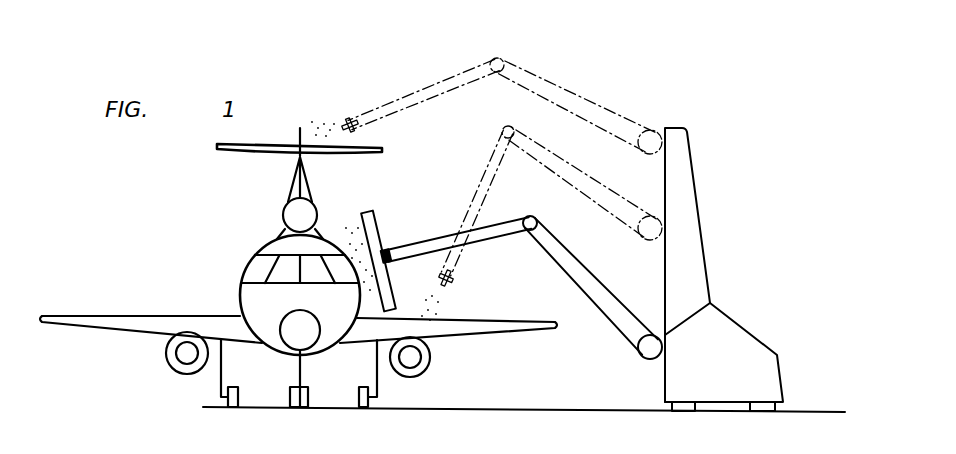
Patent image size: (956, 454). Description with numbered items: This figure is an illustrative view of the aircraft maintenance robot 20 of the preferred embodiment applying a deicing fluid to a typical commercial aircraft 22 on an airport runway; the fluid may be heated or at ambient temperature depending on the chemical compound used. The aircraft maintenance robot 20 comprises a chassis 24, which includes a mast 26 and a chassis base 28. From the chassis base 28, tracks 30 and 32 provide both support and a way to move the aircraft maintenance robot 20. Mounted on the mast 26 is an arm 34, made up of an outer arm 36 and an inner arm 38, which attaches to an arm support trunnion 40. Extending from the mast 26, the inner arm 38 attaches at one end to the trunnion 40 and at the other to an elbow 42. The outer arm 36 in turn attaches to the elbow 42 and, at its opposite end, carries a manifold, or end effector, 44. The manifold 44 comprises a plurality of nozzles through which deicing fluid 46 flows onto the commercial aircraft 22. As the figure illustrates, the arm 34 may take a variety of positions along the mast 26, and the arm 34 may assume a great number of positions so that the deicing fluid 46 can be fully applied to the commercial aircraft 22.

The aircraft maintenance robot 20 is at (586, 214).
The commercial aircraft 22 is at (250, 233).
The chassis 24 is at (586, 214).
The mast 26 is at (697, 203).
The chassis base 28 is at (758, 338).
The track 30 is at (778, 409).
The track 32 is at (670, 408).
The arm 34 is at (498, 152).
The outer arm 36 is at (418, 91).
The inner arm 38 is at (596, 103).
The arm support trunnion 40 is at (660, 126).
The elbow 42 is at (500, 57).
The manifold (end effector) 44 is at (351, 115).
The deicing fluid 46 is at (314, 127).